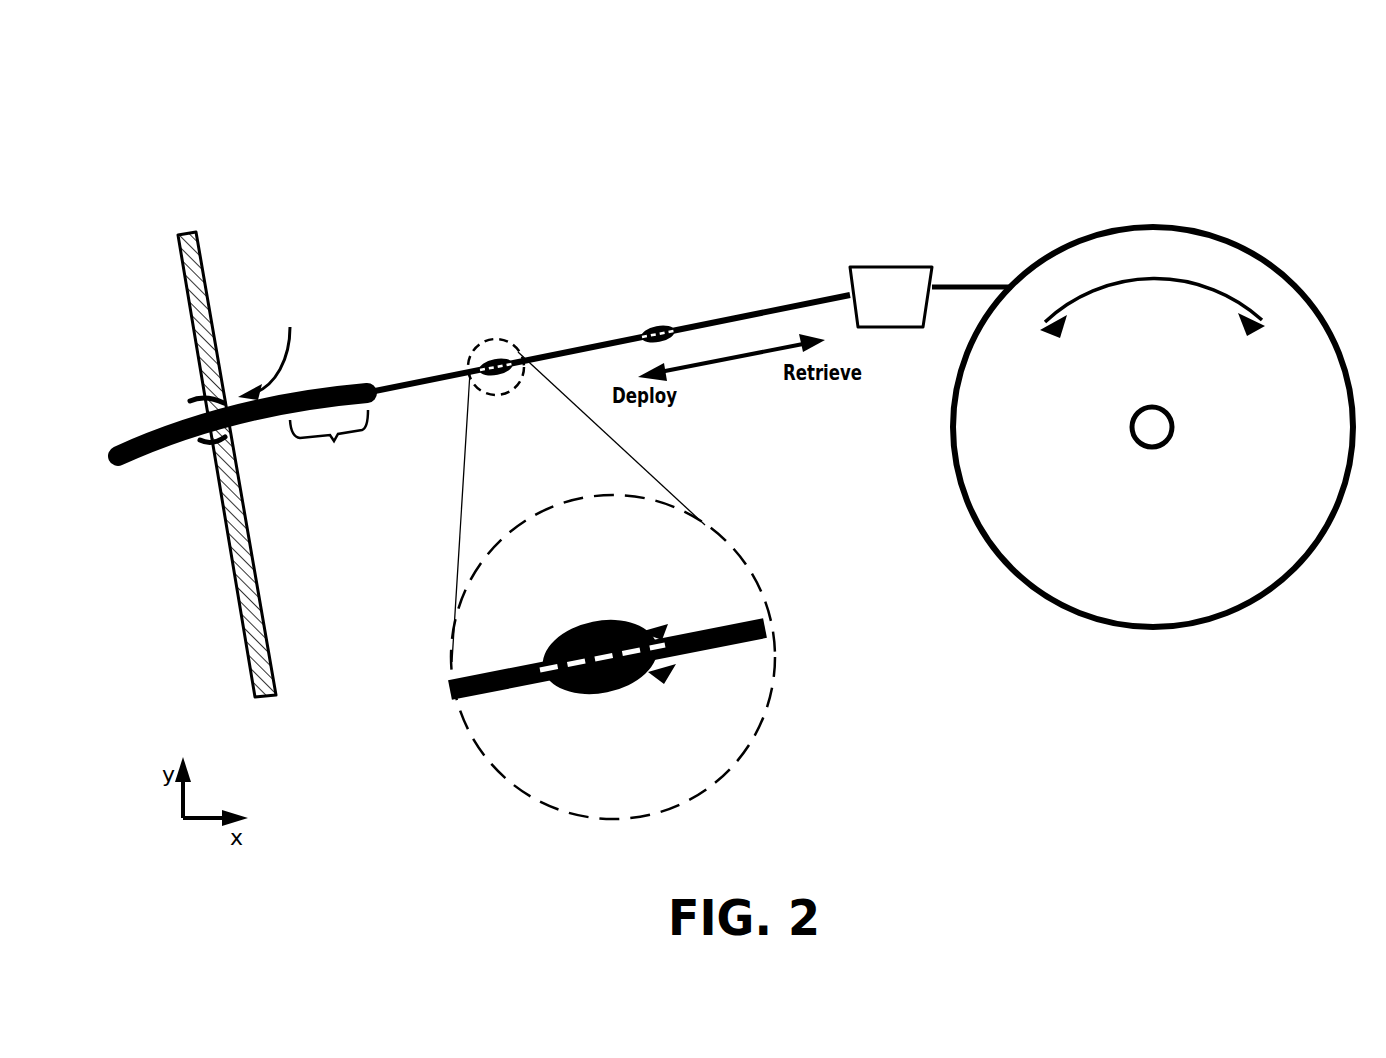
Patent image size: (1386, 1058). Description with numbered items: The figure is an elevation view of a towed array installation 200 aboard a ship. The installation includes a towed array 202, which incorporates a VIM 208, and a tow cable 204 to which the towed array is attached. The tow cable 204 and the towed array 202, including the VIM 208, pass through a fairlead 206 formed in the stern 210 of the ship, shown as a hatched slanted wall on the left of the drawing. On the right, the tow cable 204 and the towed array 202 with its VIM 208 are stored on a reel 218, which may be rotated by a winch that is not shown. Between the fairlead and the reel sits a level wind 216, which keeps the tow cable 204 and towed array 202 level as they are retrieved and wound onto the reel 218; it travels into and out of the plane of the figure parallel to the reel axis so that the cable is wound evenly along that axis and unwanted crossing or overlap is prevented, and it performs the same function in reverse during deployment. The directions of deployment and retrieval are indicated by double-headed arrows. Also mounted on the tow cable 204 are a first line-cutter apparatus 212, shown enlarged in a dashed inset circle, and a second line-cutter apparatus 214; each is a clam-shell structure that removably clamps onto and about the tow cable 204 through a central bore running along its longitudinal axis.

The towed array installation 200 is at (318, 98).
The towed array 202 is at (245, 427).
The tow cable 204 is at (438, 373).
The fairlead 206 is at (281, 348).
The VIM 208 is at (329, 444).
The stern 210 is at (205, 292).
The first line-cutter apparatus 212 is at (597, 627).
The second line-cutter apparatus 214 is at (648, 325).
The level wind 216 is at (850, 275).
The reel 218 is at (1108, 230).